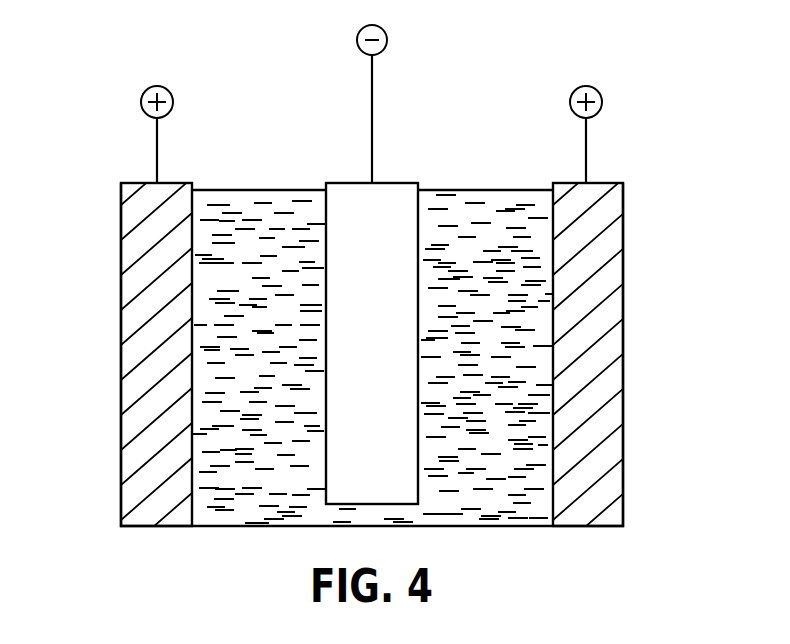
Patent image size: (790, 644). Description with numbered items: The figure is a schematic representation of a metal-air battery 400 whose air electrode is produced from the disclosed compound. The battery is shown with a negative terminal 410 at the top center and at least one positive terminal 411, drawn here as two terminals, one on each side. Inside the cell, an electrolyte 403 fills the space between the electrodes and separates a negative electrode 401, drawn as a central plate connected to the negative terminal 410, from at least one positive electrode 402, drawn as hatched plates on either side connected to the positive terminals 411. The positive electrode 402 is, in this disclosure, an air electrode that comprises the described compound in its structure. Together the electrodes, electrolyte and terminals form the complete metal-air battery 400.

The metal-air battery 400 is at (370, 311).
The negative electrode 401 is at (397, 205).
The positive electrode 402 is at (130, 305).
The electrolyte 403 is at (270, 210).
The negative terminal 410 is at (387, 33).
The positive terminal 411 is at (142, 97).